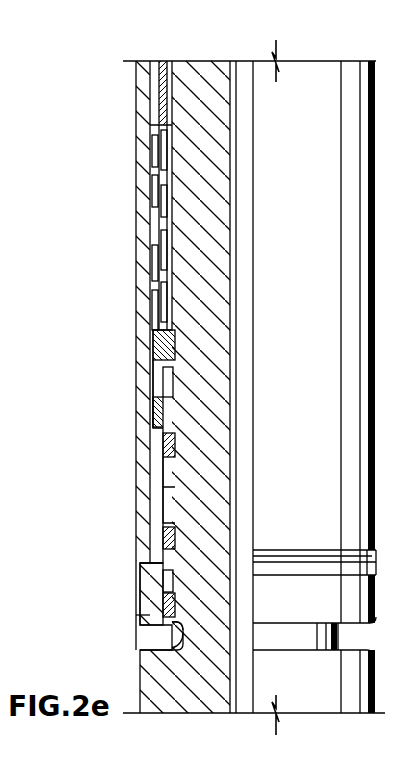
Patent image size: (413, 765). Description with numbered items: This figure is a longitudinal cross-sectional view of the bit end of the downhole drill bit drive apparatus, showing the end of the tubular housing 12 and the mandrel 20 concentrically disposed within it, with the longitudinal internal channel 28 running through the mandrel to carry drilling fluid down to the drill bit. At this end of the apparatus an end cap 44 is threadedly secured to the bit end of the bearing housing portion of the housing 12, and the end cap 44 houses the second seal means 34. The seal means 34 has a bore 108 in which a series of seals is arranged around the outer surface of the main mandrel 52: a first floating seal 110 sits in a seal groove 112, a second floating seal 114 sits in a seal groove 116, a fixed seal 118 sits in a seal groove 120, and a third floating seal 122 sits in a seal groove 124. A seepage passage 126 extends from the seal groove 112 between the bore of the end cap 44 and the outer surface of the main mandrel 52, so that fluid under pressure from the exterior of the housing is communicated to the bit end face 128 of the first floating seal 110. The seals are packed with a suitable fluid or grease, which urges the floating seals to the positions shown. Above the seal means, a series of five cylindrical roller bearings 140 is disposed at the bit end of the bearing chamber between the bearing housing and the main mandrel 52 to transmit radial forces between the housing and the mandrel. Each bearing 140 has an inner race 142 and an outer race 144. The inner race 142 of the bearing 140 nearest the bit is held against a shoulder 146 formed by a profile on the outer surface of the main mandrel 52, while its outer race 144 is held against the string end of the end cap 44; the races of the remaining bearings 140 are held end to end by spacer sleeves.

The tubular housing 12 is at (133, 226).
The mandrel 20 is at (250, 447).
The longitudinal internal channel 28 is at (245, 338).
The second seal means 34 is at (130, 589).
The end cap 44 is at (138, 618).
The main mandrel 52 is at (238, 312).
The bore 108 is at (140, 566).
The first floating seal 110 is at (178, 605).
The seal groove 112 is at (163, 590).
The second floating seal 114 is at (178, 535).
The seal groove 116 is at (160, 500).
The fixed seal 118 is at (178, 470).
The seal groove 120 is at (160, 450).
The third floating seal 122 is at (175, 380).
The seal groove 124 is at (150, 372).
The seepage passage 126 is at (172, 642).
The bit end face 128 is at (170, 630).
The cylindrical roller bearings 140 is at (150, 175).
The inner race 142 is at (175, 232).
The outer race 144 is at (150, 195).
The shoulder 146 is at (176, 350).